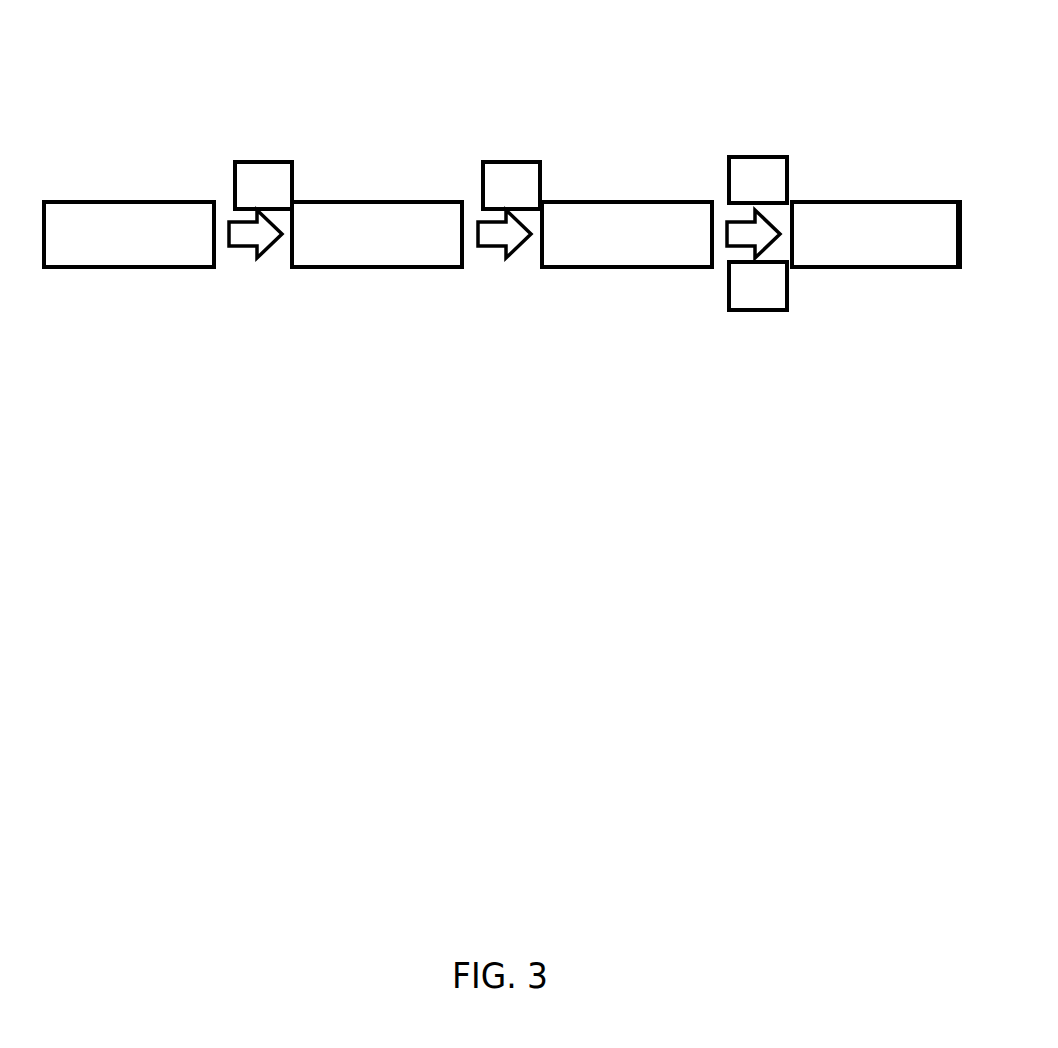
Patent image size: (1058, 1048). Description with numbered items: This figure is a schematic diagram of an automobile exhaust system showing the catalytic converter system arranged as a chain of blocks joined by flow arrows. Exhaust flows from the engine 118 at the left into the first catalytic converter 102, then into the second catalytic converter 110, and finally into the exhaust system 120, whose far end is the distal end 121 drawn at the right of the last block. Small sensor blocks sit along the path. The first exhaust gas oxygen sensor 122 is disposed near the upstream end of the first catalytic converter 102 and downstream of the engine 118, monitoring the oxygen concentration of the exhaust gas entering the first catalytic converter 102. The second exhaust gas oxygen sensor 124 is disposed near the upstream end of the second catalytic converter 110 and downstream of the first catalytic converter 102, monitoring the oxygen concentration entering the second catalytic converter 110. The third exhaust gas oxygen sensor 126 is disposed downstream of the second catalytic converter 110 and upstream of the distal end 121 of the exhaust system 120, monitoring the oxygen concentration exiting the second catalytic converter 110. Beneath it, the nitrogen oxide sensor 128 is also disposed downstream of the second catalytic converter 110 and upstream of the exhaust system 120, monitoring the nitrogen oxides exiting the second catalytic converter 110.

The engine 118 is at (128, 200).
The first exhaust gas oxygen sensor 122 is at (255, 162).
The first catalytic converter 102 is at (377, 200).
The second exhaust gas oxygen sensor 124 is at (508, 162).
The second catalytic converter 110 is at (627, 200).
The third exhaust gas oxygen sensor 126 is at (752, 157).
The nitrogen oxide sensor 128 is at (757, 310).
The exhaust system 120 is at (873, 200).
The distal end 121 is at (958, 200).